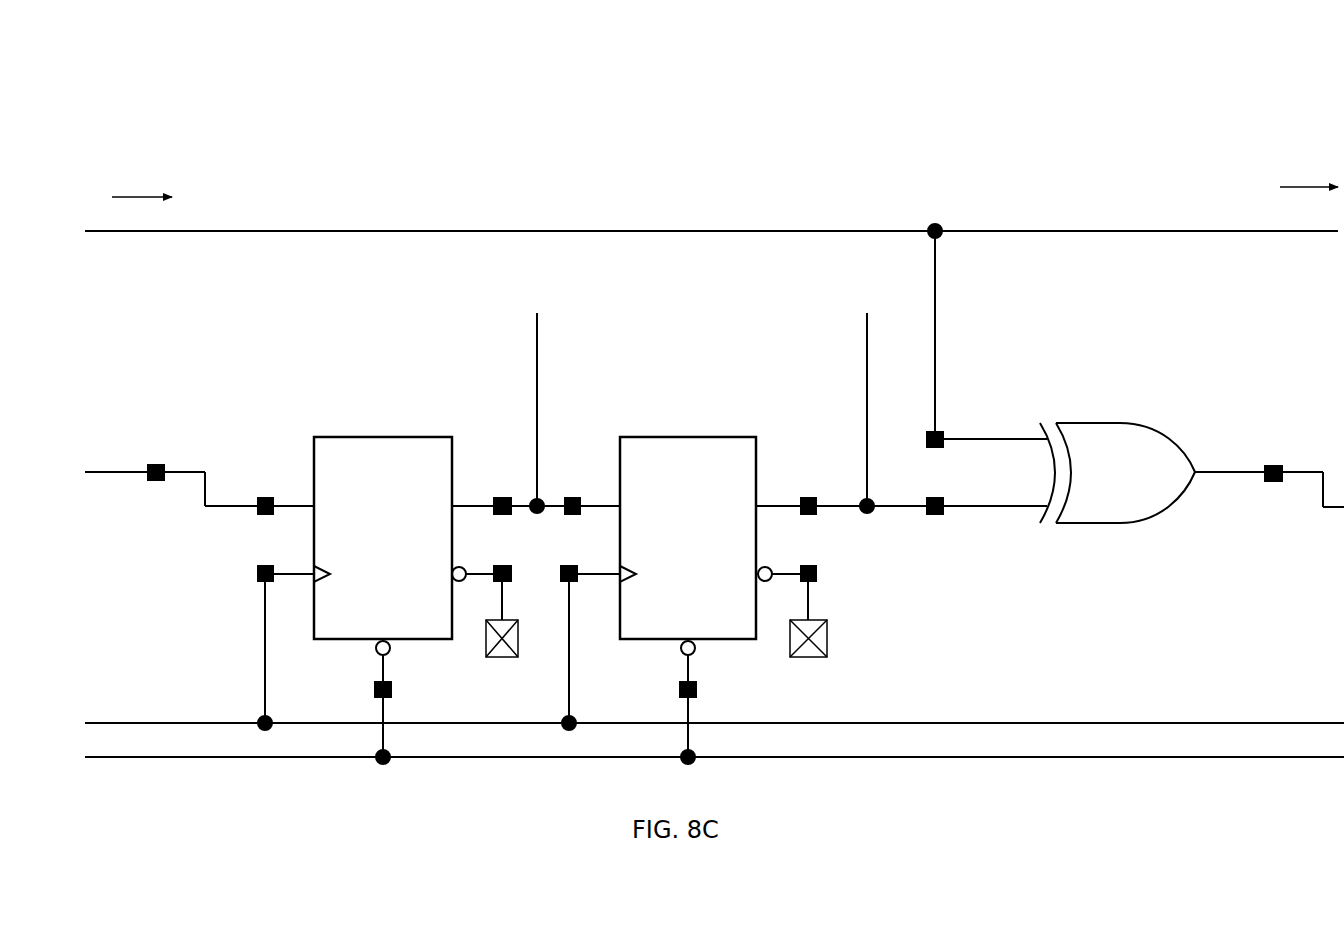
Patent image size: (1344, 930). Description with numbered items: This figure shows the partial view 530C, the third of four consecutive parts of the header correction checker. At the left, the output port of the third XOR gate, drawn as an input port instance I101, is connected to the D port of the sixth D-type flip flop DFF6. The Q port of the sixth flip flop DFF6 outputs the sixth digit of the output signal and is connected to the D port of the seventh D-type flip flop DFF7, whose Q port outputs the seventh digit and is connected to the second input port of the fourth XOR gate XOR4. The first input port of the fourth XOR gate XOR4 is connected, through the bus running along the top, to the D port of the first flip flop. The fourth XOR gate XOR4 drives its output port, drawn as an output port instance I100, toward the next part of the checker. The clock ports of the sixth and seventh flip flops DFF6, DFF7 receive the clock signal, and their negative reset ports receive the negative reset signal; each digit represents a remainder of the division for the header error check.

The partial view of header correction checker 530C is at (1123, 145).
The sixth D-type flip flop DFF6 is at (388, 600).
The seventh D-type flip flop DFF7 is at (694, 600).
The fourth XOR gate XOR4 is at (1072, 480).
The input port instance I101 is at (199, 455).
The output port instance I100 is at (1269, 464).